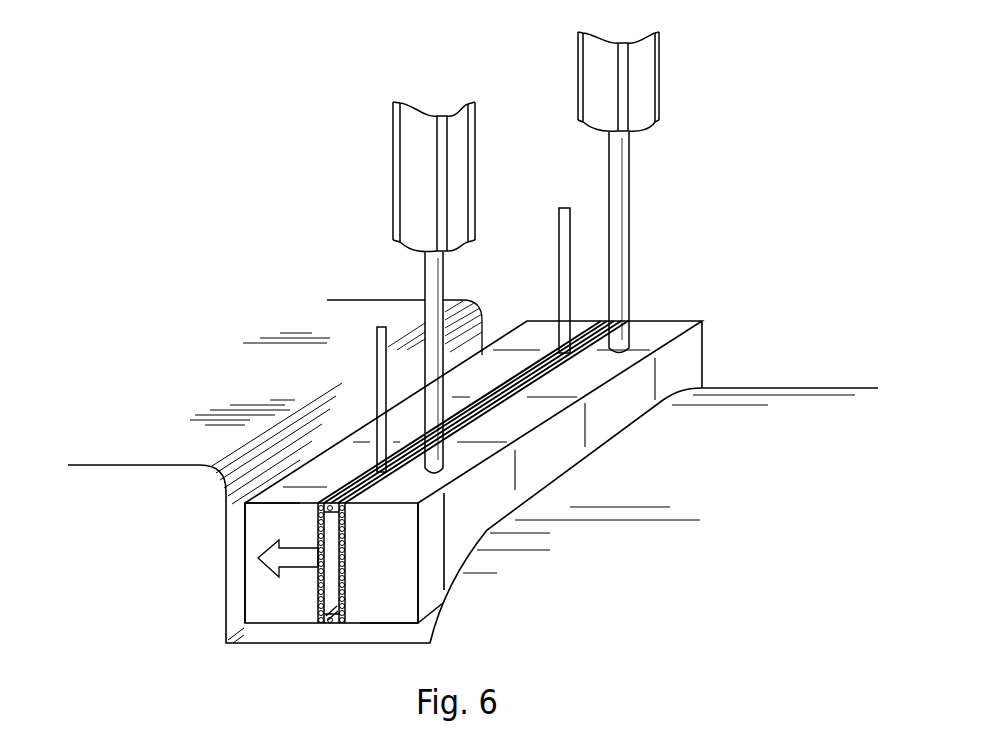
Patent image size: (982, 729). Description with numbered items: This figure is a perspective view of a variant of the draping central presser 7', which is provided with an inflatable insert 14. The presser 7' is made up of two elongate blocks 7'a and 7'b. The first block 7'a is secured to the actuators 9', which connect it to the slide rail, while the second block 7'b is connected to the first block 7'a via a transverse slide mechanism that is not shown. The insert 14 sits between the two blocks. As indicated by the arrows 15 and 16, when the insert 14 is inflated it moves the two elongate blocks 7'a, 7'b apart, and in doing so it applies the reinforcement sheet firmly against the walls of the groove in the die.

The draping central presser 7' is at (516, 386).
The first elongate block 7'a is at (443, 563).
The second elongate block 7'b is at (209, 563).
The actuators 9' is at (493, 252).
The inflatable insert 14 is at (330, 583).
The arrows 15 is at (380, 323).
The arrow 16 is at (265, 568).